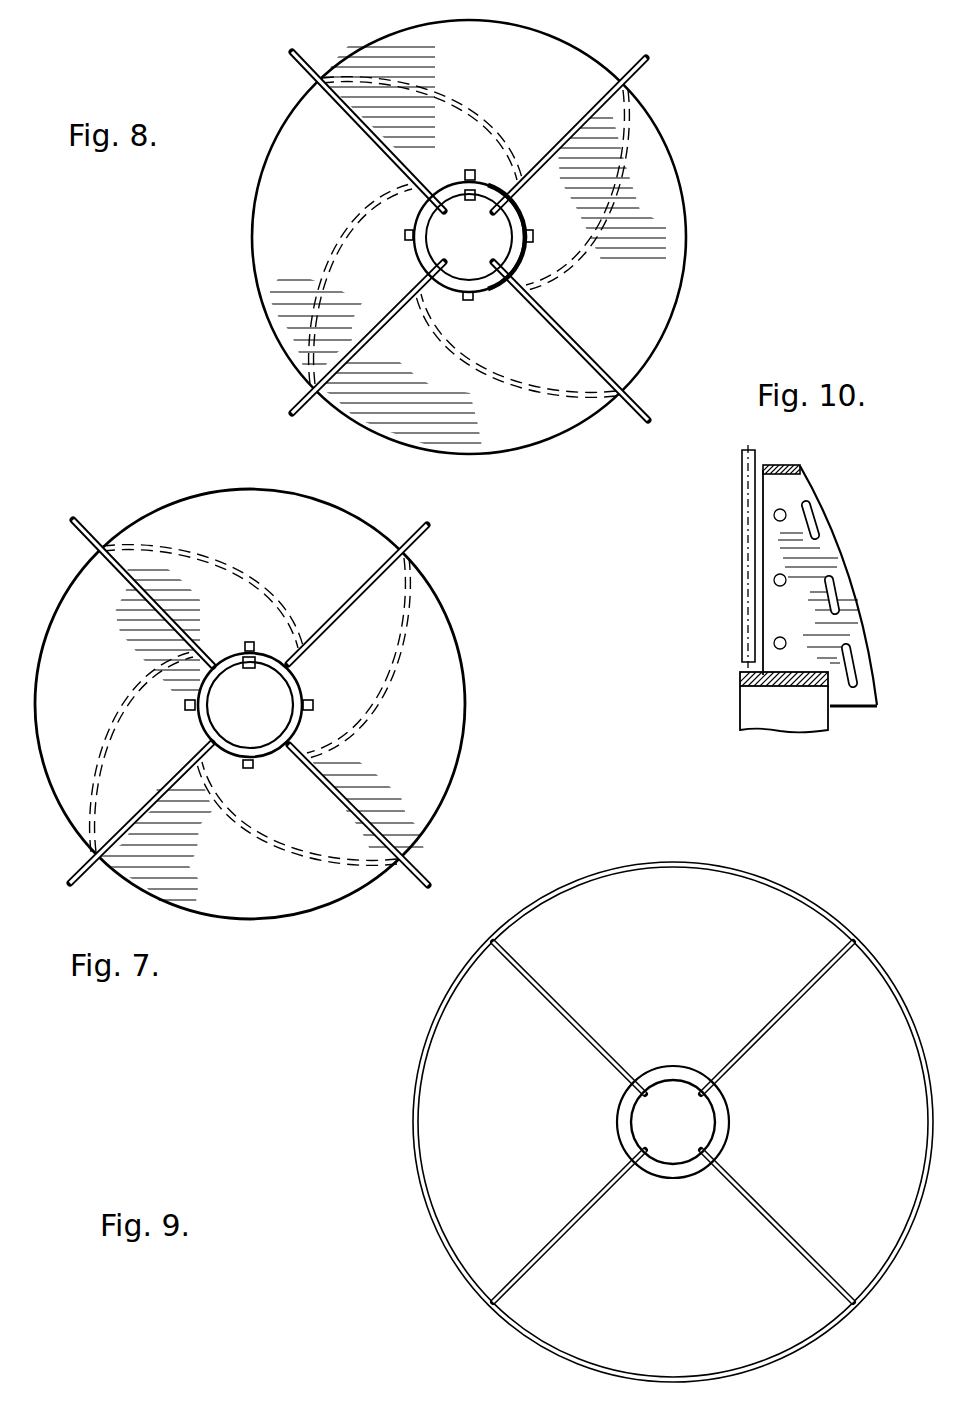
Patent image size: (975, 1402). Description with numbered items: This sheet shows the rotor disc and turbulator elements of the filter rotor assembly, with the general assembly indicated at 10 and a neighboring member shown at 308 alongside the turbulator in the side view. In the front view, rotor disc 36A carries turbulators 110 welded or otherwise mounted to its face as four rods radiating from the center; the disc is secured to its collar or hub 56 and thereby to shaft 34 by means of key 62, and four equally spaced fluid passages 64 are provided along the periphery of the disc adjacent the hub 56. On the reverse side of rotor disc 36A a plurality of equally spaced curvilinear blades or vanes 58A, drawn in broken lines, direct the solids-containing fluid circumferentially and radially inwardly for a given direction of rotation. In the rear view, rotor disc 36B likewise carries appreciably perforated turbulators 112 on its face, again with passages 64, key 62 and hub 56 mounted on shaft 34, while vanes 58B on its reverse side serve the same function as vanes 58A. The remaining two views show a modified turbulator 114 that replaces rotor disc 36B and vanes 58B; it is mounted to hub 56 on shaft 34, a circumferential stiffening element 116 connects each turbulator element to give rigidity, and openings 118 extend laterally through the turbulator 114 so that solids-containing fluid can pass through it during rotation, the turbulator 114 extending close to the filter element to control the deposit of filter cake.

In FIG. 9, the fan wheel assembly 10 is at (876, 911).
In FIG. 7, the shaft 34 is at (283, 690).
In FIG. 10, the shaft 34 is at (740, 707).
In FIG. 9, the shaft 34 is at (707, 1128).
In FIG. 7, the rotor disc 36A is at (462, 785).
In FIG. 8, the rotor disc 36B is at (253, 232).
In FIG. 8, the collar or hub 56 is at (526, 262).
In FIG. 7, the collar or hub 56 is at (302, 672).
In FIG. 10, the collar or hub 56 is at (738, 675).
In FIG. 9, the collar or hub 56 is at (718, 1101).
In FIG. 7, the blades or vanes 58A is at (150, 545).
In FIG. 8, the vanes 58B is at (386, 78).
In FIG. 8, the key 62 is at (476, 192).
In FIG. 7, the key 62 is at (256, 657).
In FIG. 8, the fluid passages 64 is at (470, 170).
In FIG. 7, the fluid passages 64 is at (244, 645).
In FIG. 7, the turbulators 110 is at (429, 526).
In FIG. 8, the turbulators 112 is at (305, 51).
In FIG. 10, the turbulator 114 is at (830, 522).
In FIG. 9, the turbulator 114 is at (851, 946).
In FIG. 10, the circumferential stiffening element 116 is at (802, 466).
In FIG. 9, the circumferential stiffening element 116 is at (656, 862).
In FIG. 10, the openings 118 is at (838, 598).
In FIG. 10, the support bar 308 is at (742, 575).